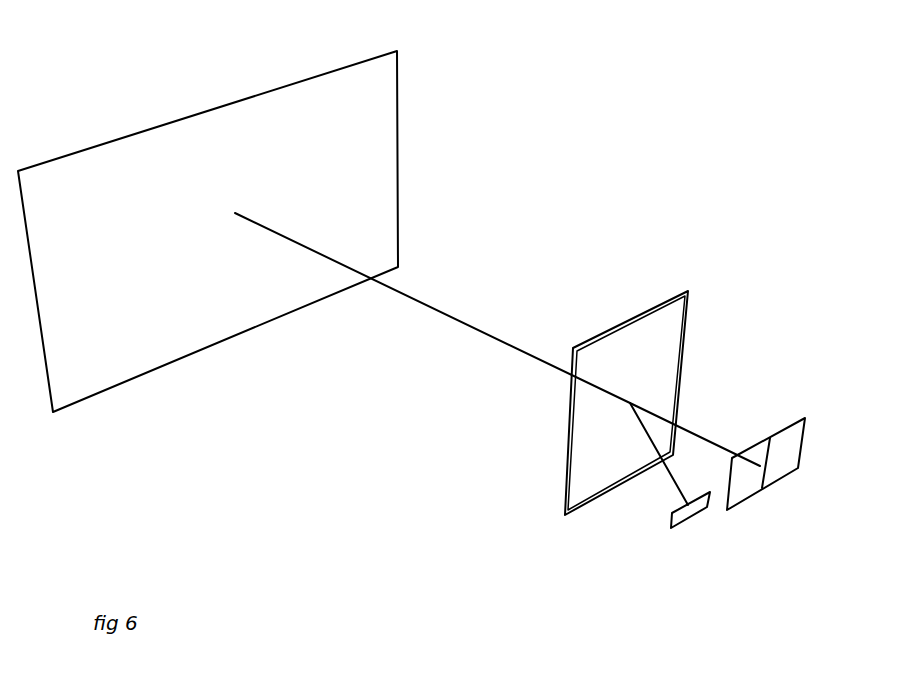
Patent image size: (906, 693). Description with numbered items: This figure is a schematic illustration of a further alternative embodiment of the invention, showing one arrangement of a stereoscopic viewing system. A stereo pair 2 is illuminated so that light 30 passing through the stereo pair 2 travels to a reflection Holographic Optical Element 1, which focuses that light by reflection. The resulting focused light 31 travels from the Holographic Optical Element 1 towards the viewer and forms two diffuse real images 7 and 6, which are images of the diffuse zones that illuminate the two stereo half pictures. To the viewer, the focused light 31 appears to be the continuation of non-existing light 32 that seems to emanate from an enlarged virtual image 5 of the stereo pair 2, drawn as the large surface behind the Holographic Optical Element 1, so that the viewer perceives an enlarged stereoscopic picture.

The enlarged virtual image 5 is at (393, 62).
The non-existing light 32 is at (440, 307).
The reflection Holographic Optical Element 1 is at (650, 307).
The focused light 31 is at (700, 435).
The light passing through the stereo pair 30 is at (637, 445).
The stereo pair 2 is at (675, 533).
The diffuse real image 6 is at (743, 490).
The diffuse real image 7 is at (788, 447).